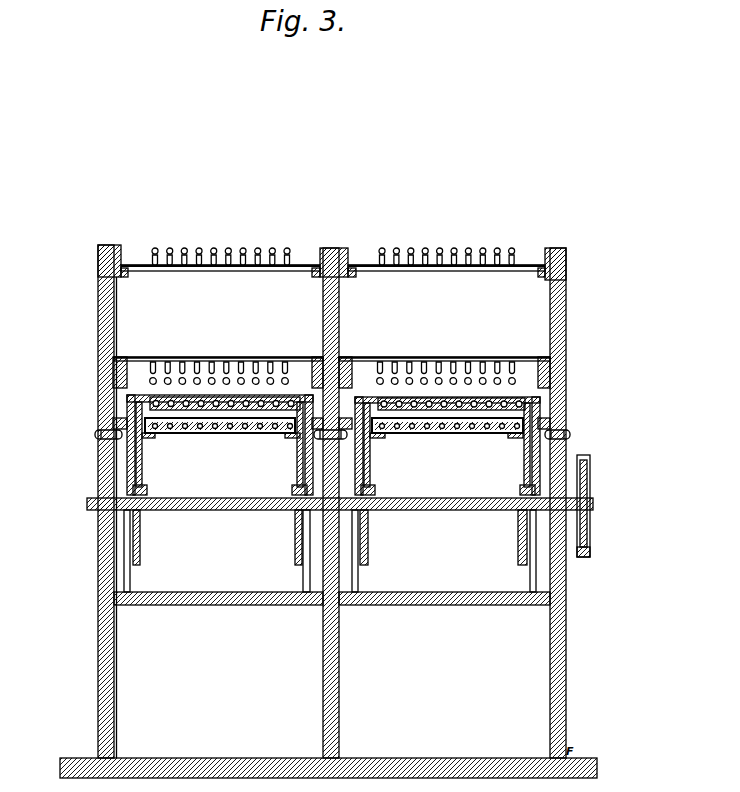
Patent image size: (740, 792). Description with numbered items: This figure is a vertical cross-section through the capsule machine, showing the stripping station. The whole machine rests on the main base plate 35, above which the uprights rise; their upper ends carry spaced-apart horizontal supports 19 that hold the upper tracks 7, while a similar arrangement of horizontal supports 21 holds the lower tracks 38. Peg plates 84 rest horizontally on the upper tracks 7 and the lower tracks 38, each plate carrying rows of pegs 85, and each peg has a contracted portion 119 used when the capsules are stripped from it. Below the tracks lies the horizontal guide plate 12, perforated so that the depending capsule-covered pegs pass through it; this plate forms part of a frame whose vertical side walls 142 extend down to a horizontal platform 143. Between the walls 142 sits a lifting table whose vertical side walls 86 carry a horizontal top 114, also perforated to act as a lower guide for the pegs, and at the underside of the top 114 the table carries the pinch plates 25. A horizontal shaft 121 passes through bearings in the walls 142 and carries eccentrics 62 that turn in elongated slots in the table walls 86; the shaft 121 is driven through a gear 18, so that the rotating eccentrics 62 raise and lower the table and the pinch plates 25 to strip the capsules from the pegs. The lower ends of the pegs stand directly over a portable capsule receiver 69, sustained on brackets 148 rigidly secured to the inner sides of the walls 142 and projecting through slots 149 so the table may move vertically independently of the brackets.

The upper track 7 is at (128, 276).
The horizontal guide plate 12 is at (100, 303).
The gear 18 is at (590, 555).
The horizontal support 19 is at (119, 249).
The horizontal support 21 is at (112, 364).
The pinch plate 25 is at (127, 413).
The main base plate 35 is at (440, 758).
The lower track 38 is at (123, 357).
The eccentric 62 is at (140, 485).
The capsule receiver 69 is at (207, 433).
The peg plate 84 is at (147, 266).
The peg 85 is at (333, 205).
The side wall of lifting table 86 is at (367, 463).
The horizontal top of lifting table 114 is at (130, 400).
The contracted portion of peg 119 is at (223, 250).
The horizontal shaft 121 is at (620, 535).
The vertical side wall 142 is at (302, 574).
The horizontal platform 143 is at (167, 607).
The bracket 148 is at (372, 438).
The slot 149 is at (522, 447).